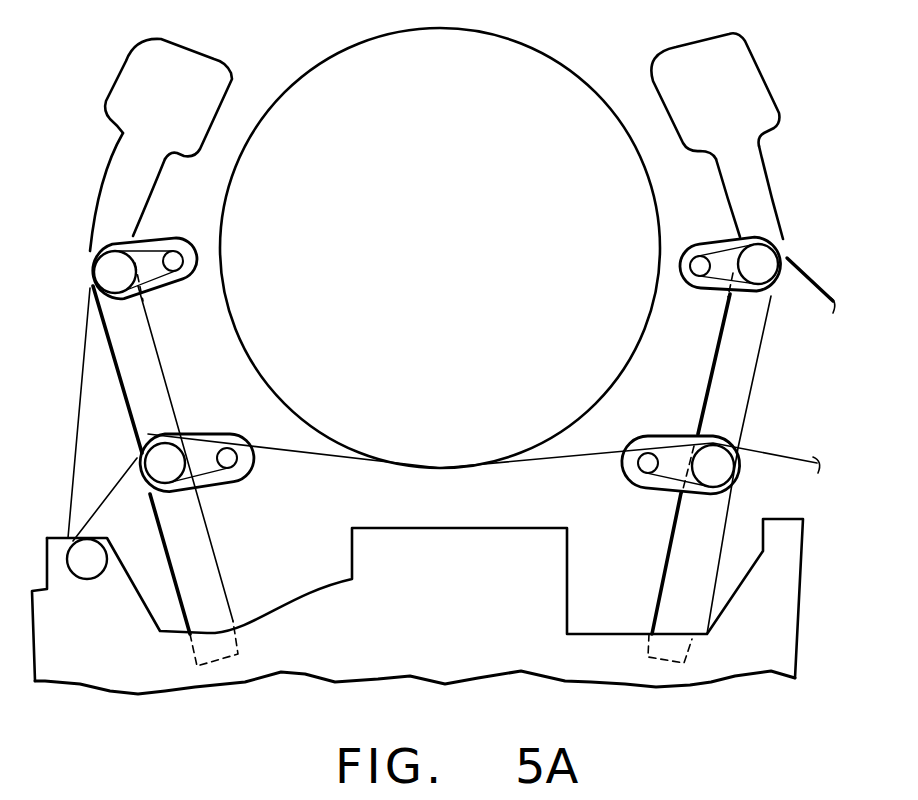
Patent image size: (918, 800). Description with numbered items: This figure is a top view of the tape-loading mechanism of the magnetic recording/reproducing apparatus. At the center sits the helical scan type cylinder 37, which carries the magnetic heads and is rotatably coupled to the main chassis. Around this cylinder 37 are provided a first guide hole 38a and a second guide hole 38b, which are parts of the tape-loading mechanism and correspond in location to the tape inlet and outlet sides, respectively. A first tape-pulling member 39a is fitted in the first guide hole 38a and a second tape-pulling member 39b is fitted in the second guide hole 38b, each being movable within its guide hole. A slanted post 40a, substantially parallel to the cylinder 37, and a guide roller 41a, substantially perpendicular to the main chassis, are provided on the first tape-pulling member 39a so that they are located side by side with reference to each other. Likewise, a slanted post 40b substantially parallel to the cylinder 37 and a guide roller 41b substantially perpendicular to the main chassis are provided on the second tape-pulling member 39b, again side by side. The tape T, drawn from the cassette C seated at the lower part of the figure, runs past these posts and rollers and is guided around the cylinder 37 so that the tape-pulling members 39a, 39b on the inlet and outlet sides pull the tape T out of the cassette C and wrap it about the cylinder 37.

The helical scan type cylinder 37 is at (609, 92).
The first guide hole 38a is at (160, 362).
The second guide hole 38b is at (757, 362).
The first tape-pulling member 39a is at (209, 482).
The second tape-pulling member 39b is at (669, 490).
The slanted post 40a is at (234, 465).
The slanted post 40b is at (641, 463).
The guide roller 41a is at (153, 465).
The guide roller 41b is at (718, 468).
The tape T is at (598, 456).
The cassette C is at (68, 662).